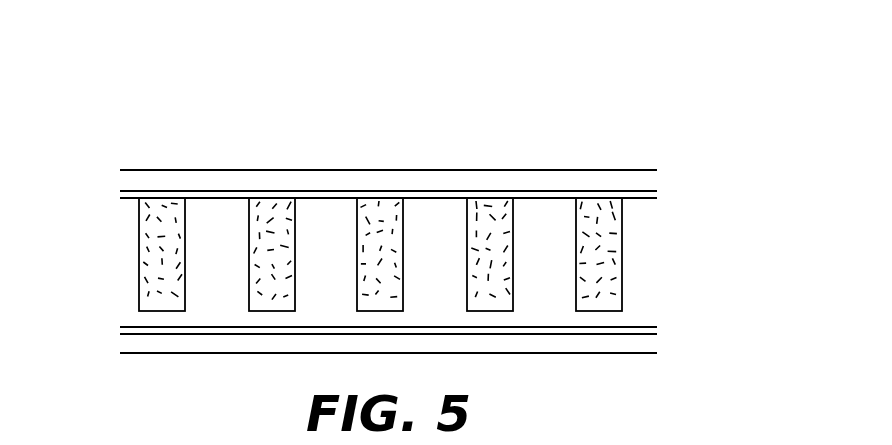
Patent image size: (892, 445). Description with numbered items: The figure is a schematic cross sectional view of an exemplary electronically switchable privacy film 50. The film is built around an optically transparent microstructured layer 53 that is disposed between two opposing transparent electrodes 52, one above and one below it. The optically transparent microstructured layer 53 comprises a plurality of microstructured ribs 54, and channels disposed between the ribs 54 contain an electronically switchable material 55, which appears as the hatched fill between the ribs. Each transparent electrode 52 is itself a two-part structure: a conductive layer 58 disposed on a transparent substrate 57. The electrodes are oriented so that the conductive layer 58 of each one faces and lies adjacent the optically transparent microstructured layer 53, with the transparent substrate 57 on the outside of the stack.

The electronically switchable privacy film 50 is at (655, 92).
The transparent electrode 52 is at (360, 226).
The optically transparent microstructured layer 53 is at (100, 200).
The microstructured rib 54 is at (330, 202).
The electronically switchable material 55 is at (270, 193).
The transparent substrate 57 is at (138, 168).
The conductive layer 58 is at (206, 185).